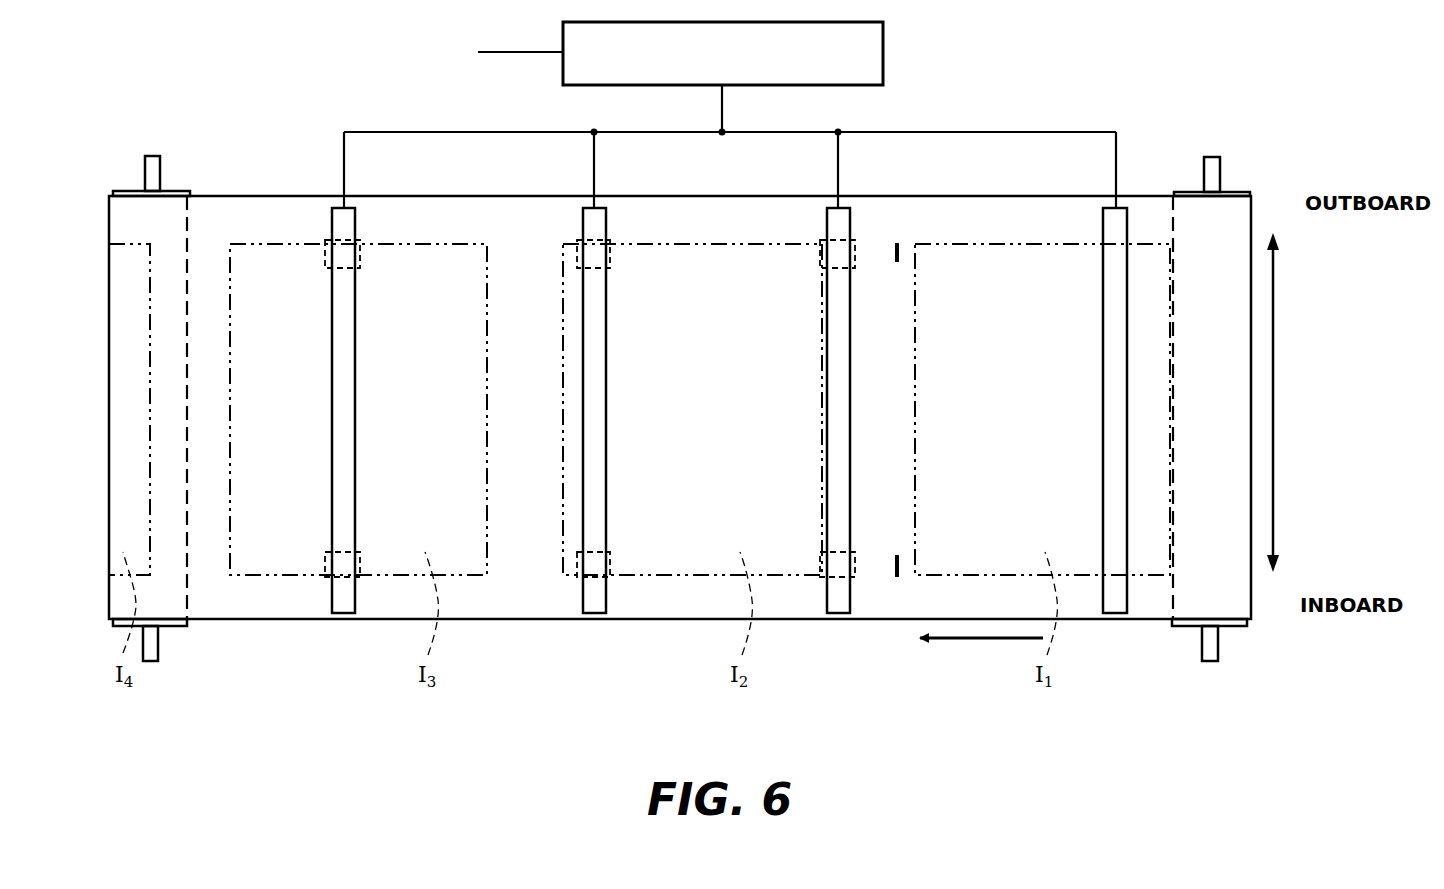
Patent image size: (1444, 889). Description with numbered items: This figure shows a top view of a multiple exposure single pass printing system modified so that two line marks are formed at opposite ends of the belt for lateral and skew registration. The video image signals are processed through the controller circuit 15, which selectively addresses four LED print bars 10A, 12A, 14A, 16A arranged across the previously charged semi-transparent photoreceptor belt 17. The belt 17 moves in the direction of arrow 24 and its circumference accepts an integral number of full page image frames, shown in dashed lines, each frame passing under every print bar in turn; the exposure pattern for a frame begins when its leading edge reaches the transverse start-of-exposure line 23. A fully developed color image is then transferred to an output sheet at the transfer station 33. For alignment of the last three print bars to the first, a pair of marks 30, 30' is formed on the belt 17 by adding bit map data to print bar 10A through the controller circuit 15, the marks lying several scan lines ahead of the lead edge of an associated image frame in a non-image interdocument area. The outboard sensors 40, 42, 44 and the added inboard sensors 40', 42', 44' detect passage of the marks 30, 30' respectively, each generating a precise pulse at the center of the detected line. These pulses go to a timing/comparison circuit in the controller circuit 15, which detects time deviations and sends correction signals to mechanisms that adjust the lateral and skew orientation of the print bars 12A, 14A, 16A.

The controller circuit 15 is at (873, 62).
The photoreceptor belt 17 is at (1085, 620).
The transfer station 33 is at (86, 593).
The start-of-exposure line 23 is at (915, 407).
The LED print bar 10A is at (1112, 435).
The LED print bar 12A is at (839, 337).
The LED print bar 14A is at (600, 428).
The LED print bar 16A is at (349, 445).
The sensor circuit 40 is at (856, 215).
The sensor circuit 42 is at (615, 215).
The sensor circuit 44 is at (327, 215).
The additional sensor 40' is at (813, 602).
The additional sensor 42' is at (615, 602).
The additional sensor 44' is at (324, 602).
The target line 30 is at (921, 206).
The line mark 30' is at (876, 620).
The arrow 24 is at (992, 640).